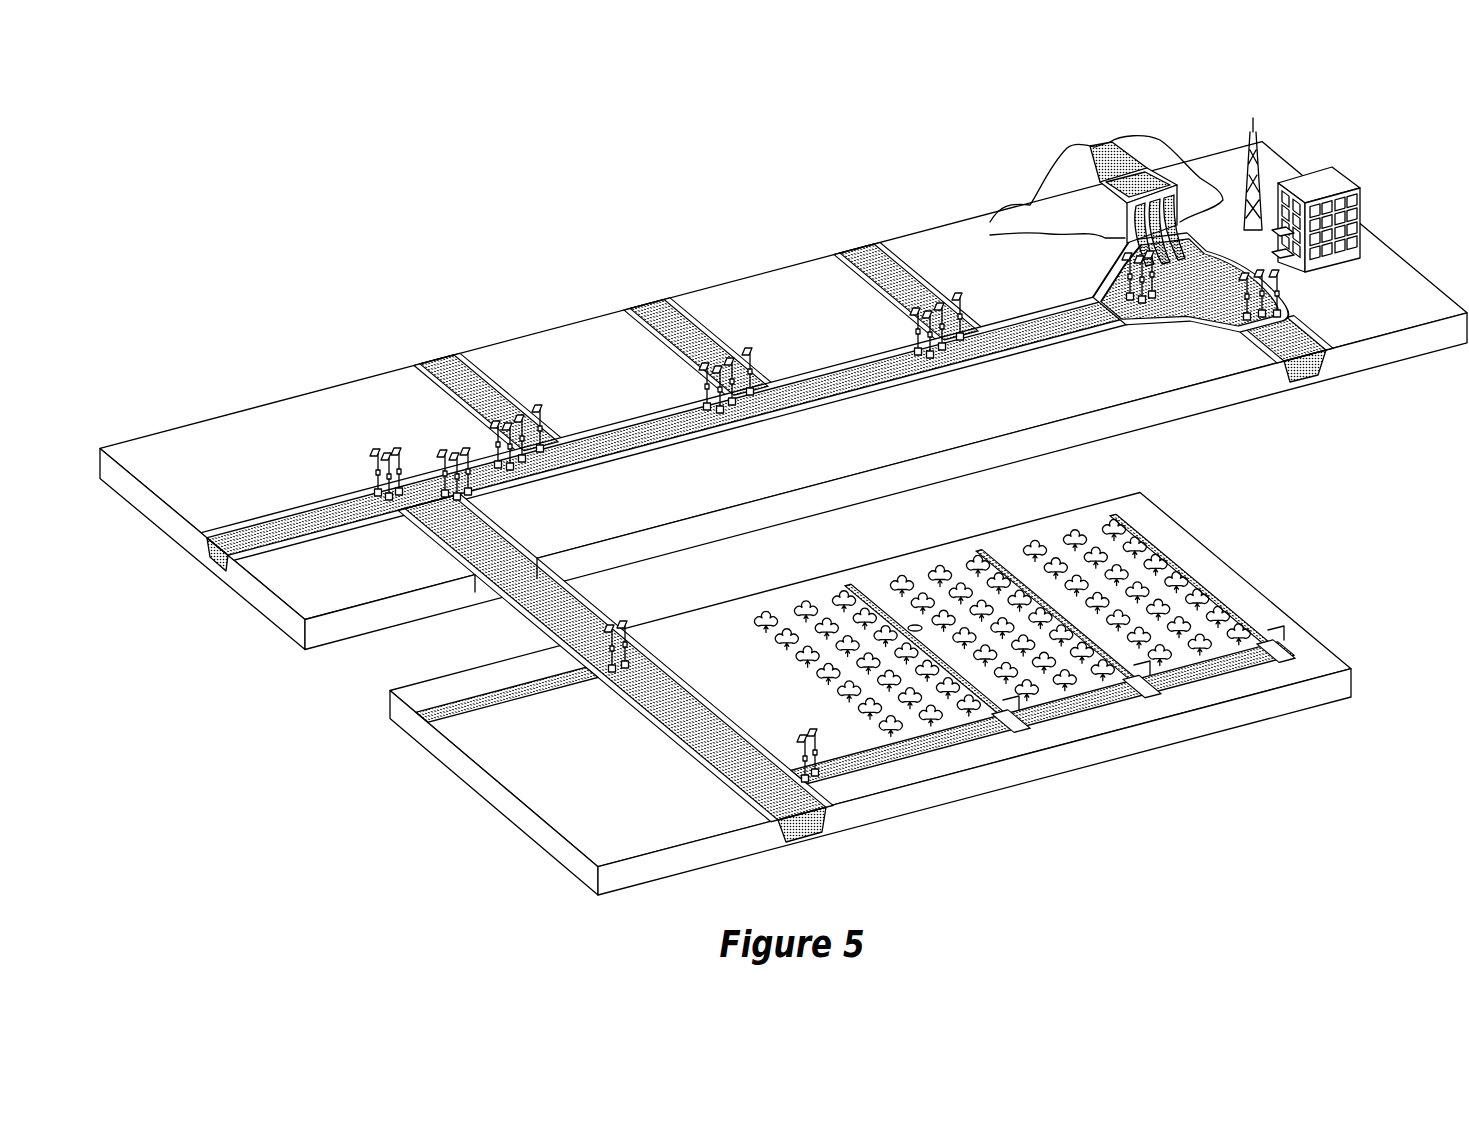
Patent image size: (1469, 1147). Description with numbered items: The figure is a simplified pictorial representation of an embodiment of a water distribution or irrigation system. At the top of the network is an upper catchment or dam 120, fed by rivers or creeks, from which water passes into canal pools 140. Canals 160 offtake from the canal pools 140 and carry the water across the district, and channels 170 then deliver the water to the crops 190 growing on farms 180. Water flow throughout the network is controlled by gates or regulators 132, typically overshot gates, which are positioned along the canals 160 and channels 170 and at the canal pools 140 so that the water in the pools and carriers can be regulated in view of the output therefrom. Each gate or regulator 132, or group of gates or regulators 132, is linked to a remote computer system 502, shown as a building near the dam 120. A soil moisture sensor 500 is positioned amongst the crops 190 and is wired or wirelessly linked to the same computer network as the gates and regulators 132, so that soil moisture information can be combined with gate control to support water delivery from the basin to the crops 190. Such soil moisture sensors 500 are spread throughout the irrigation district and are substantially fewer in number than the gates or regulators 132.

The upper catchment or dam 120 is at (1100, 152).
The gates or regulators 132 is at (950, 276).
The canal pools 140 is at (1195, 318).
The canals 160 is at (850, 248).
The channels 170 is at (522, 702).
The farms 180 is at (1236, 578).
The crops 190 is at (945, 732).
The soil moisture sensor 500 is at (913, 622).
The remote computer system 502 is at (1340, 180).